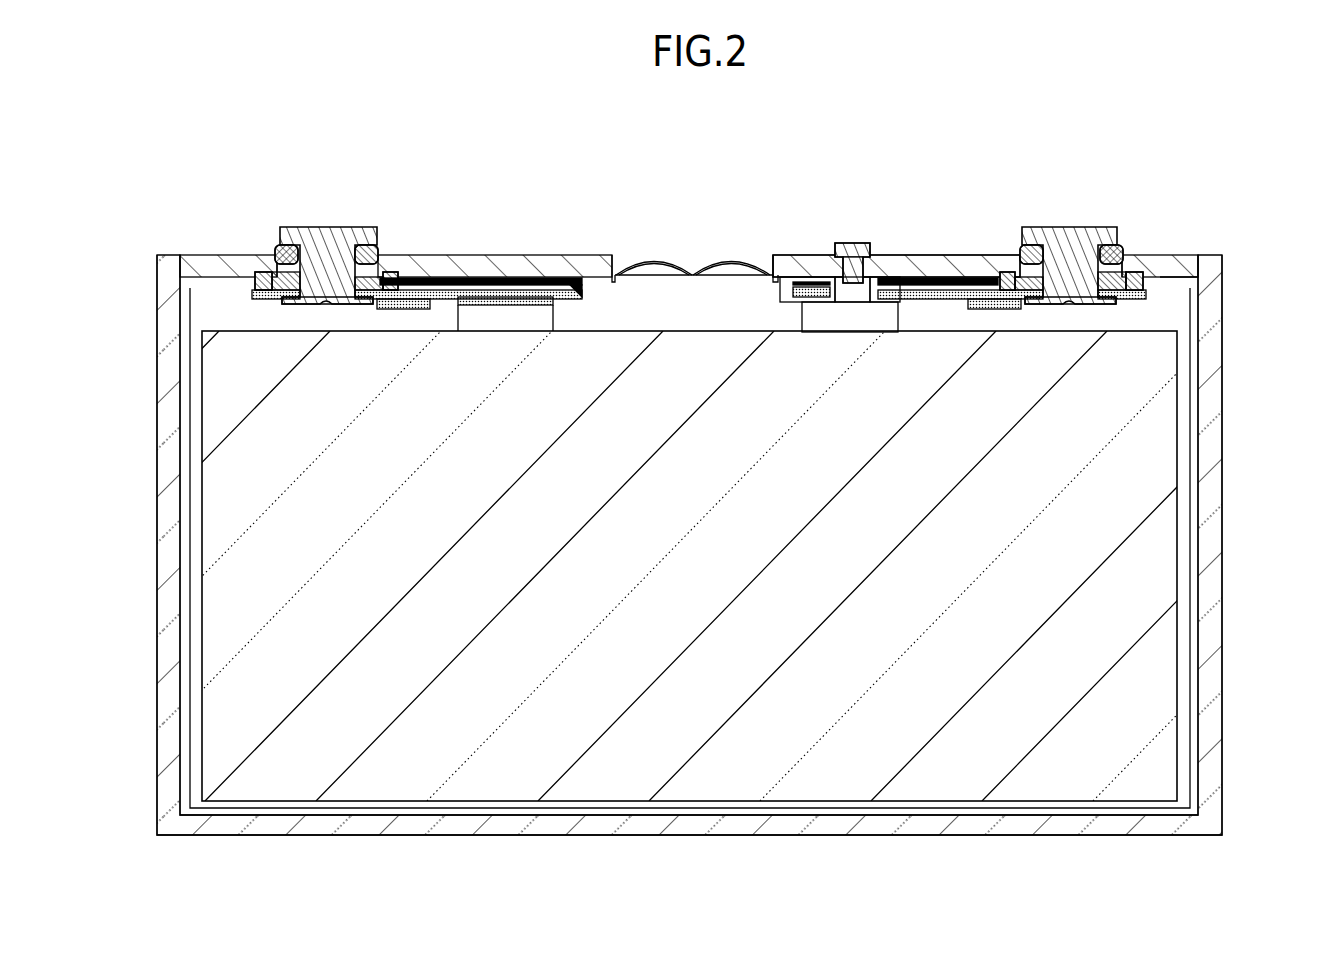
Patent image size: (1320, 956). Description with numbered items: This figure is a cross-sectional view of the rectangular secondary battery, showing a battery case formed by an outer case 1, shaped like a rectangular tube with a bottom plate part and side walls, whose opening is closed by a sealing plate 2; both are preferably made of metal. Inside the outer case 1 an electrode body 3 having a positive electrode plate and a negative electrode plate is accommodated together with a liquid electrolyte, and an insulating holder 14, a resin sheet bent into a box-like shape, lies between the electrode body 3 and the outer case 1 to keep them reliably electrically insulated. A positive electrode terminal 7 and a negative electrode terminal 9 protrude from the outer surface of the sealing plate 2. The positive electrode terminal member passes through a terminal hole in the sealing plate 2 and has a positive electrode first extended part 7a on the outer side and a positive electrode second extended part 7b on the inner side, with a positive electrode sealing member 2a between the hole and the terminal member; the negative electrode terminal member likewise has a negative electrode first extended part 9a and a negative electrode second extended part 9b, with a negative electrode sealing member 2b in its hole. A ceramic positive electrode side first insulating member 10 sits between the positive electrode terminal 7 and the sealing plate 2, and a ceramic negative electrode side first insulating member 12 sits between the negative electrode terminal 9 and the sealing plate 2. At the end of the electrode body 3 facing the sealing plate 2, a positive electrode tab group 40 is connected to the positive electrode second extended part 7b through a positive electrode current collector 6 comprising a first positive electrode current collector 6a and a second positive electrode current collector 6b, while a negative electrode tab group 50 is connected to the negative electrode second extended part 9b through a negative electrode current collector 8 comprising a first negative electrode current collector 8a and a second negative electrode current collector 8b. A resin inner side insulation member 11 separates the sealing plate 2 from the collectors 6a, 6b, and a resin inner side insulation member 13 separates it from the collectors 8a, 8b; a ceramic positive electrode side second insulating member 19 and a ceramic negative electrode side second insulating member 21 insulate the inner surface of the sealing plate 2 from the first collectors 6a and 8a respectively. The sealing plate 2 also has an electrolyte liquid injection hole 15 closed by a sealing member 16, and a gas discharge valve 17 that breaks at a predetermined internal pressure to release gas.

The outer case 1 is at (1223, 553).
The sealing plate 2 is at (573, 265).
The positive electrode sealing member 2a is at (1130, 270).
The negative electrode sealing member 2b is at (272, 268).
The electrode body 3 is at (235, 700).
The positive electrode current collector 6 is at (952, 310).
The first positive electrode current collector 6a is at (1135, 299).
The second positive electrode current collector 6b is at (942, 284).
The positive electrode terminal 7 is at (1070, 250).
The positive electrode first extended part 7a is at (1030, 247).
The positive electrode second extended part 7b is at (1035, 307).
The negative electrode current collector 8 is at (385, 312).
The first negative electrode current collector 8a is at (396, 279).
The second negative electrode current collector 8b is at (453, 288).
The negative electrode terminal 9 is at (330, 250).
The negative electrode first extended part 9a is at (292, 243).
The negative electrode second extended part 9b is at (298, 307).
The positive electrode side first insulating member 10 is at (1120, 253).
The inner side insulation member 11 is at (902, 283).
The negative electrode side first insulating member 12 is at (372, 245).
The inner side insulation member 13 is at (530, 281).
The insulating holder 14 is at (1180, 638).
The electrolyte liquid injection hole 15 is at (828, 270).
The sealing member 16 is at (857, 244).
The gas discharge valve 17 is at (676, 262).
The positive electrode side second insulating member 19 is at (1180, 278).
The negative electrode side second insulating member 21 is at (262, 284).
The positive electrode tab group 40 is at (794, 288).
The negative electrode tab group 50 is at (503, 318).